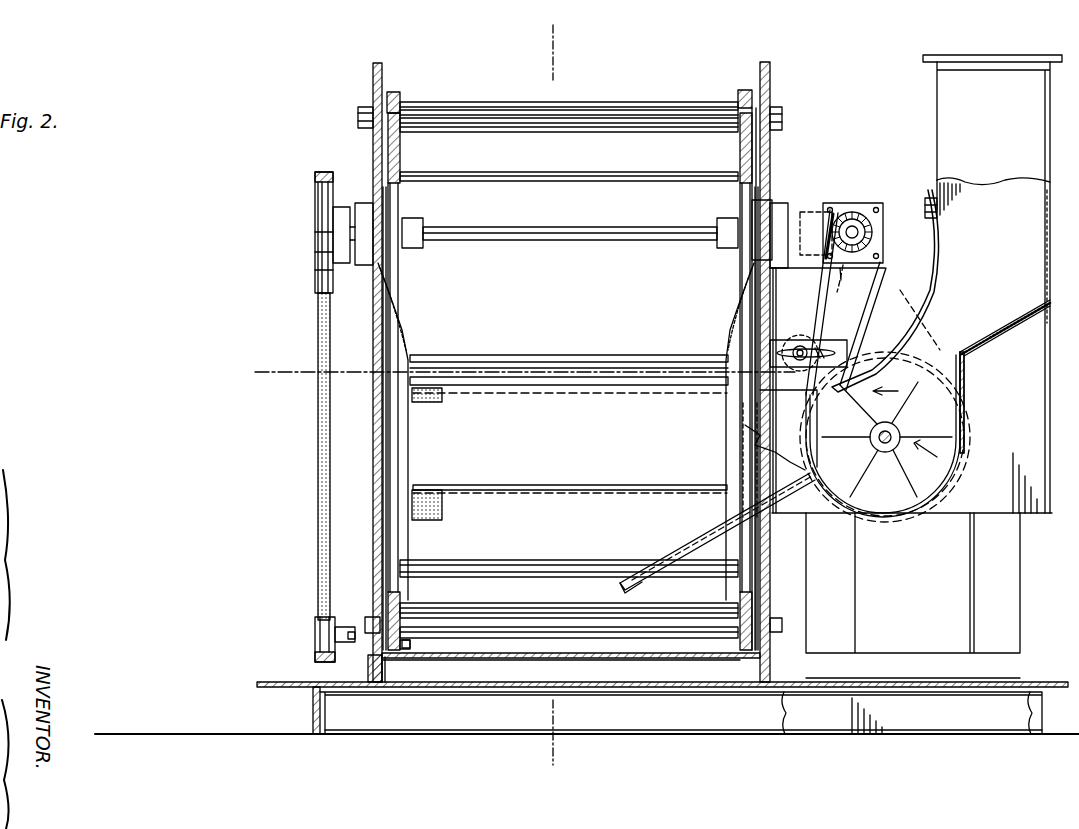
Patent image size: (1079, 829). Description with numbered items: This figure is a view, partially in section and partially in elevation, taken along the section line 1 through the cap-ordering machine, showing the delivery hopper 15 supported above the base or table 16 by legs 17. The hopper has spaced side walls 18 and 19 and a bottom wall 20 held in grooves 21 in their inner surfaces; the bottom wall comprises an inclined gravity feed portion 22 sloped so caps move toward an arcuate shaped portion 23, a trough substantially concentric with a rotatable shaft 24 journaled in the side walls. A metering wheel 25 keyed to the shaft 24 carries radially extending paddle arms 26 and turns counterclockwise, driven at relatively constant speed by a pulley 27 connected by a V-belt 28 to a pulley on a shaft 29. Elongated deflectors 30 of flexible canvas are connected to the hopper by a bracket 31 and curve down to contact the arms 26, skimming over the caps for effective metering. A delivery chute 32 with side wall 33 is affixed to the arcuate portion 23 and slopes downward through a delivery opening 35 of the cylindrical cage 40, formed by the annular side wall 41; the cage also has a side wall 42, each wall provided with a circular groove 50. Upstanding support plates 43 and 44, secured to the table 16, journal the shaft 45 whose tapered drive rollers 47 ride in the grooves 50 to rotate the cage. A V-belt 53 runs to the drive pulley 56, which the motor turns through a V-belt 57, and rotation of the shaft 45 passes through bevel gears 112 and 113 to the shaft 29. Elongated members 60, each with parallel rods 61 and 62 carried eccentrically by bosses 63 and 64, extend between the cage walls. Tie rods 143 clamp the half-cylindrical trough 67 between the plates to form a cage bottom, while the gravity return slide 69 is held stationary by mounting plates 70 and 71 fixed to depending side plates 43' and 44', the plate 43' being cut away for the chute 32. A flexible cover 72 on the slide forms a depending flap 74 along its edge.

The section line 1 is at (580, 35).
The delivery hopper 15 is at (933, 48).
The base or table 16 is at (257, 682).
The legs 17 is at (850, 634).
The side wall 18 is at (1010, 105).
The side wall 19 is at (1015, 243).
The bottom wall 20 is at (1010, 308).
The grooves 21 is at (978, 346).
The gravity feed portion 22 is at (964, 374).
The arcuate shaped portion 23 is at (945, 473).
The rotatable shaft 24 is at (907, 430).
The metering wheel 25 is at (945, 460).
The paddle arms 26 is at (905, 403).
The pulley 27 is at (933, 347).
The V-belt 28 is at (883, 270).
The shaft 29 is at (860, 212).
The elongated deflectors 30 is at (829, 401).
The bracket 31 is at (925, 198).
The delivery chute 32 is at (630, 592).
The side wall 33 is at (655, 553).
The delivery opening 35 is at (772, 568).
The cylindrical cage 40 is at (681, 78).
The side wall 41 is at (753, 90).
The side wall 42 is at (393, 92).
The support plate 43 is at (783, 356).
The side plate 43' is at (711, 431).
The support plate 44 is at (357, 360).
The side plate 44' is at (423, 431).
The shaft 45 is at (492, 227).
The drive rollers 47 is at (380, 197).
The circular groove 50 is at (395, 602).
The V-belt 53 is at (318, 322).
The drive pulley 56 is at (315, 635).
The V-belt 57 is at (315, 200).
The elongated members 60 is at (511, 92).
The rod 61 is at (588, 132).
The rod 62 is at (623, 137).
The boss 63 is at (738, 95).
The boss 64 is at (403, 92).
The trough 67 is at (632, 660).
The gravity return slide 69 is at (560, 402).
The mounting plate 70 is at (415, 414).
The mounting plate 71 is at (418, 485).
The cover 72 is at (600, 407).
The depending flap 74 is at (555, 518).
The bevel gear 112 is at (835, 214).
The bevel gear 113 is at (841, 265).
The tie rods 143 is at (365, 118).